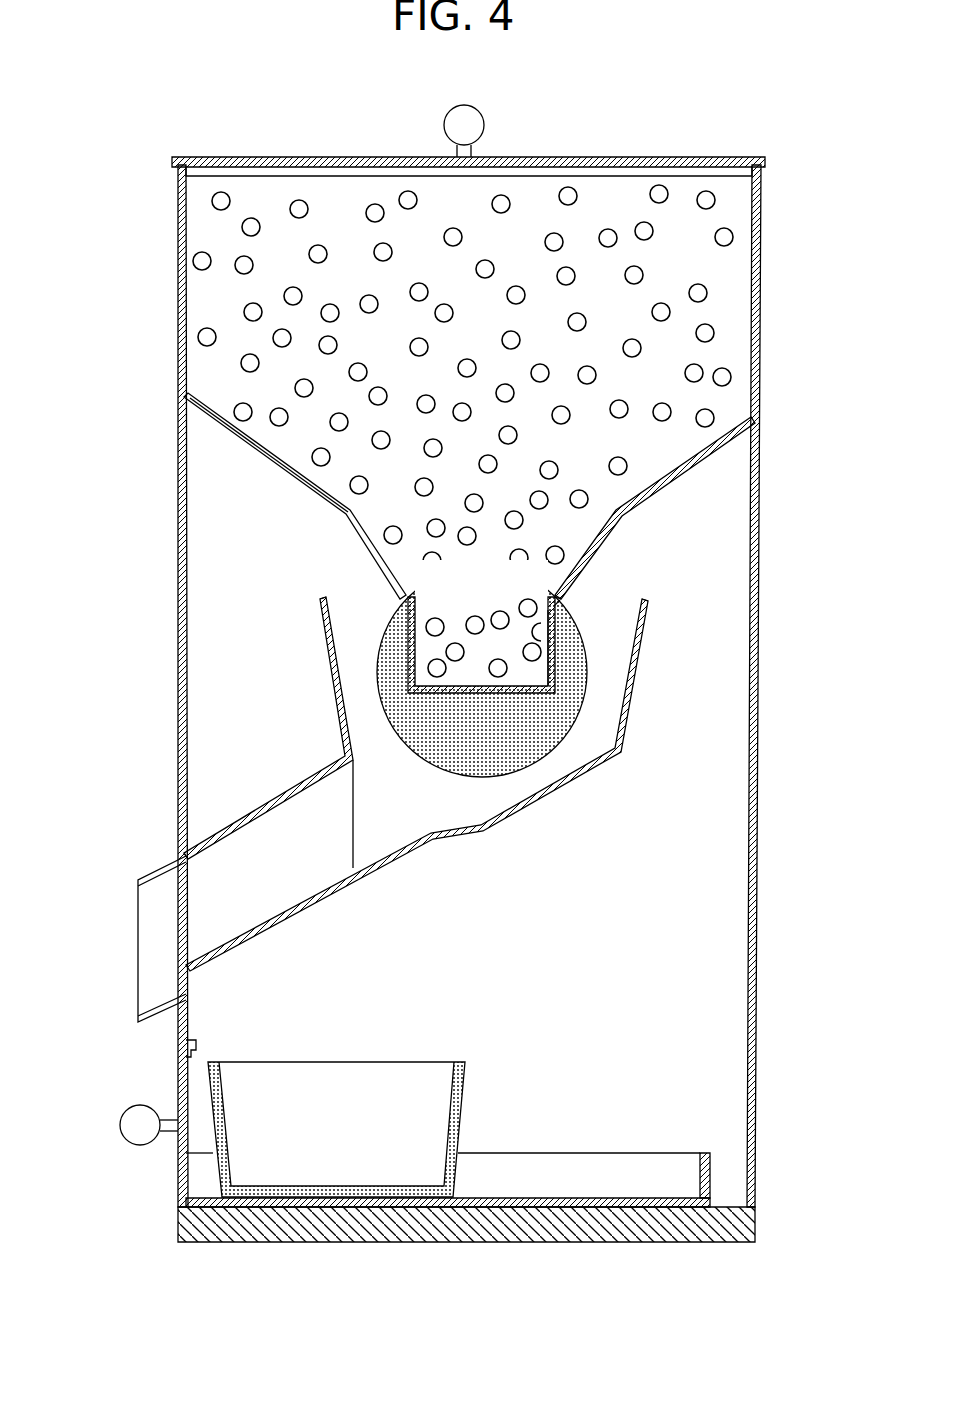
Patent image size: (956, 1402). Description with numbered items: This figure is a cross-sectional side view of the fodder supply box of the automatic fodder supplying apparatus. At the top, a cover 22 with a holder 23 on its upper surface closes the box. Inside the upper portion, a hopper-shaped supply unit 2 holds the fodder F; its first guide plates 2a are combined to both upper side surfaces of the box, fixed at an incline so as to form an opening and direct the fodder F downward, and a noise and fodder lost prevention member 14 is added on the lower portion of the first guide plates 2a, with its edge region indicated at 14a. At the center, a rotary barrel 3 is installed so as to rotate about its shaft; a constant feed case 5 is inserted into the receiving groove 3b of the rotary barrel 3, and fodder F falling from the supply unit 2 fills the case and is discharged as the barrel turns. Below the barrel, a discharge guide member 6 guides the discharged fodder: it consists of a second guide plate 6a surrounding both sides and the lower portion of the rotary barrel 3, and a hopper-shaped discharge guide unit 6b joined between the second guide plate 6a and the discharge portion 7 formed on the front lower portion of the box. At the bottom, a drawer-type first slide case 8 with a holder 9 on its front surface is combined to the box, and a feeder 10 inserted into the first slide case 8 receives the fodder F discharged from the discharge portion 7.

The cover 22 is at (685, 157).
The holder 23 is at (444, 122).
The fodder F is at (707, 292).
The supply unit 2 is at (690, 490).
The first guide plate 2a is at (286, 455).
The rotary barrel 3 is at (541, 748).
The receiving groove 3b is at (478, 645).
The constant feed case 5 is at (563, 655).
The noise and fodder lost prevention member 14 is at (590, 582).
The opening edge 14a is at (563, 600).
The discharge guide member 6 is at (318, 688).
The second guide plate 6a is at (330, 652).
The discharge guide unit 6b is at (265, 800).
The discharge portion 7 is at (140, 878).
The holder 9 is at (140, 1124).
The first slide case 8 is at (168, 1163).
The feeder 10 is at (220, 1190).